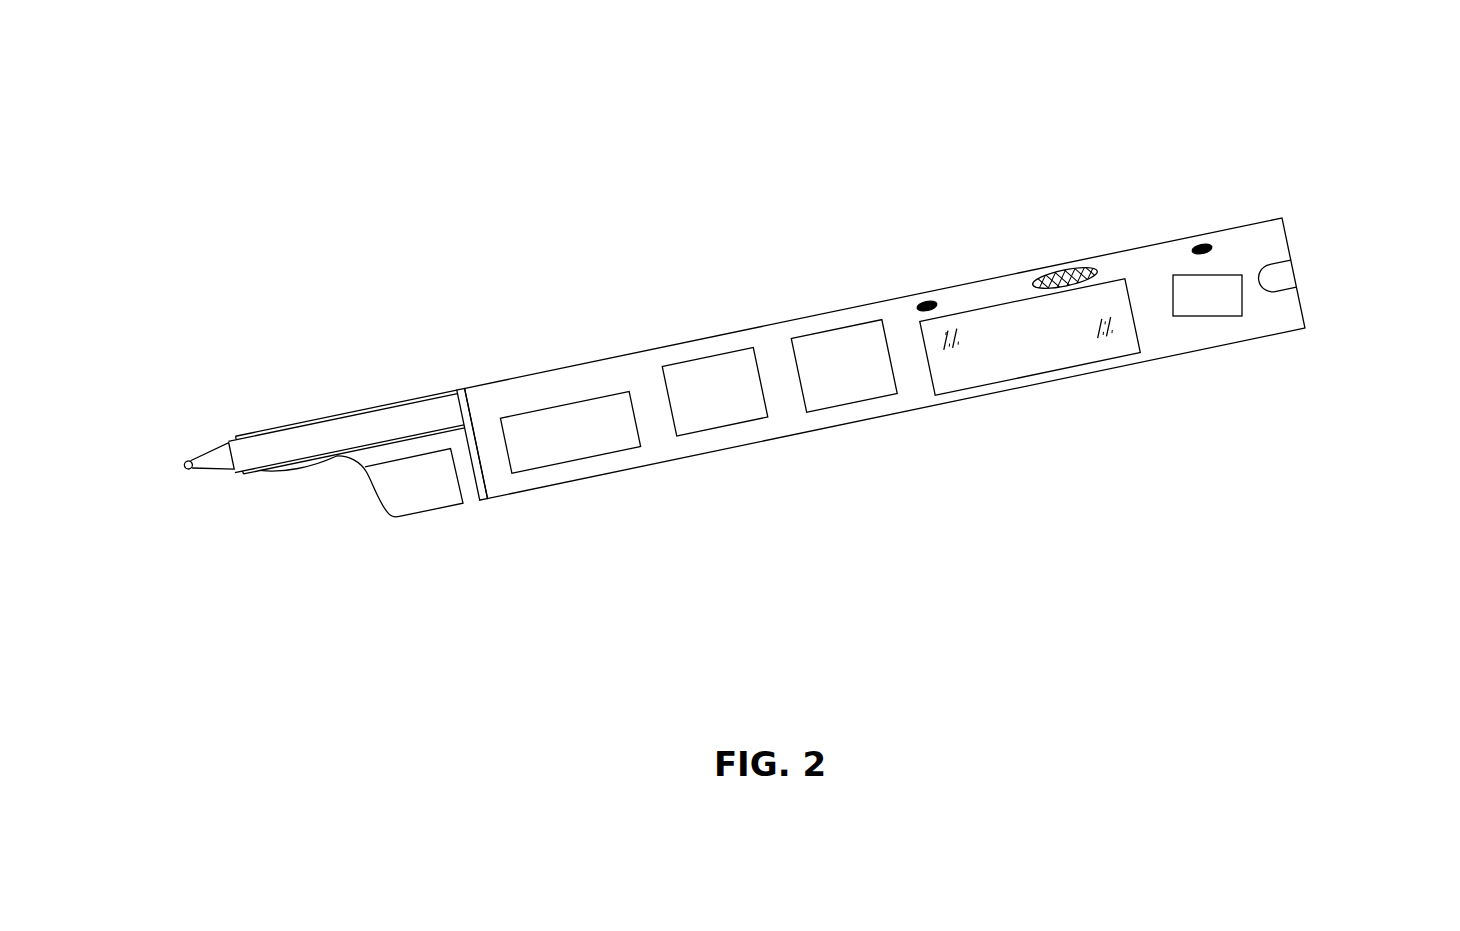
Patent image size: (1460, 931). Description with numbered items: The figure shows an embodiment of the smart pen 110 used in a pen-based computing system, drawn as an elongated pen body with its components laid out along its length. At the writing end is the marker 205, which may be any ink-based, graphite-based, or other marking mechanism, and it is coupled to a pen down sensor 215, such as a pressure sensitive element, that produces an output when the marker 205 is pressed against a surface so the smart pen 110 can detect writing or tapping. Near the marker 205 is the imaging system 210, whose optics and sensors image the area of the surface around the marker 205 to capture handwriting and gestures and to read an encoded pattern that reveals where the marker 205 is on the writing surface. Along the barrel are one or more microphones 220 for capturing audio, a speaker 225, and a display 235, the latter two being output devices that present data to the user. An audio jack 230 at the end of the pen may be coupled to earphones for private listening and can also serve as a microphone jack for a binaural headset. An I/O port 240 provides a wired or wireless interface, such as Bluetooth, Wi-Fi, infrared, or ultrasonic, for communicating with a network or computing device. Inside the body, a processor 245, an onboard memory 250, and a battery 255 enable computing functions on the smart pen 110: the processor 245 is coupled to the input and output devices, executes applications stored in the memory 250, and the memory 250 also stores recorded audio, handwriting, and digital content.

The smart pen 110 is at (713, 152).
The marker 205 is at (187, 461).
The imaging system 210 is at (361, 486).
The pen down sensor 215 is at (483, 498).
The microphones 220 is at (927, 305).
The speaker 225 is at (1067, 267).
The audio jack 230 is at (1287, 277).
The display 235 is at (1118, 340).
The I/O port 240 is at (1207, 295).
The processor 245 is at (844, 366).
The onboard memory 250 is at (715, 391).
The battery 255 is at (570, 432).